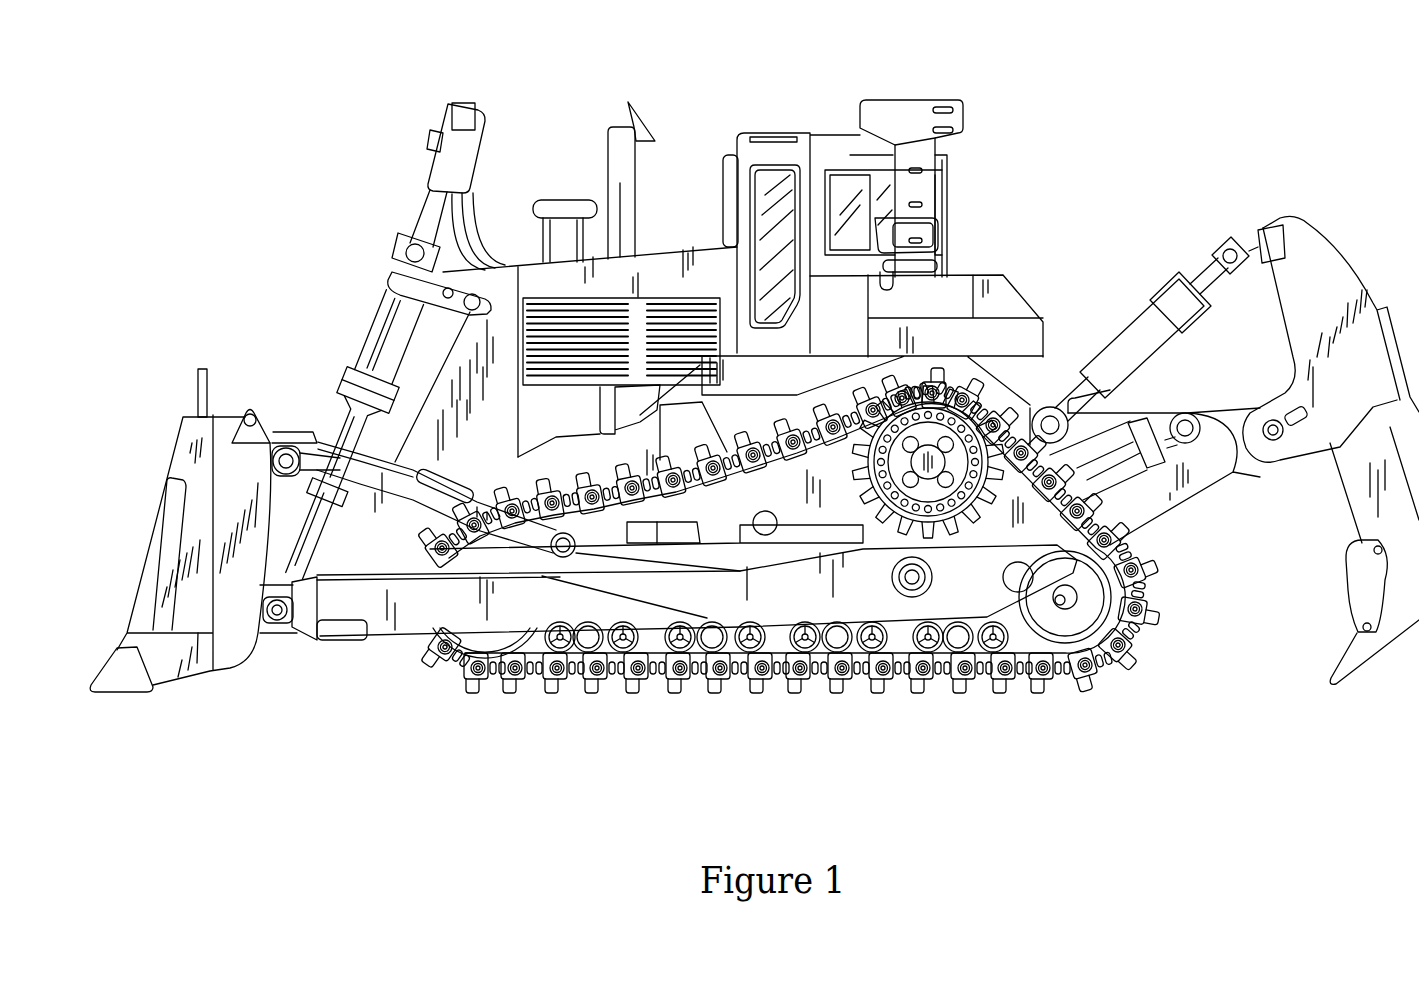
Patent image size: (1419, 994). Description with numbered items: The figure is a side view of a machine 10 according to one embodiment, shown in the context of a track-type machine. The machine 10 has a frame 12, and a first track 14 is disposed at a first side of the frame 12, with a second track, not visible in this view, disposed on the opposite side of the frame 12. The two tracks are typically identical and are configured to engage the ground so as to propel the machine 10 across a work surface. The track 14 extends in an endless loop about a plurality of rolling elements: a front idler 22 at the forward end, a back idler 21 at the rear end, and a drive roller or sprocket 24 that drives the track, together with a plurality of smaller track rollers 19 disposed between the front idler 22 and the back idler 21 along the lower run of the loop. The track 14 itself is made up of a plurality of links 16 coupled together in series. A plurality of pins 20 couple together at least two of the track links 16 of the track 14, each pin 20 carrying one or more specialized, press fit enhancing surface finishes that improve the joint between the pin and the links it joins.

The machine 10 is at (1151, 106).
The frame 12 is at (1003, 283).
The first track 14 is at (1105, 684).
The links 16 is at (966, 692).
The track rollers 19 is at (672, 679).
The pins 20 is at (810, 690).
The back idler 21 is at (1094, 586).
The front idler 22 is at (492, 660).
The drive roller or sprocket 24 is at (1036, 362).